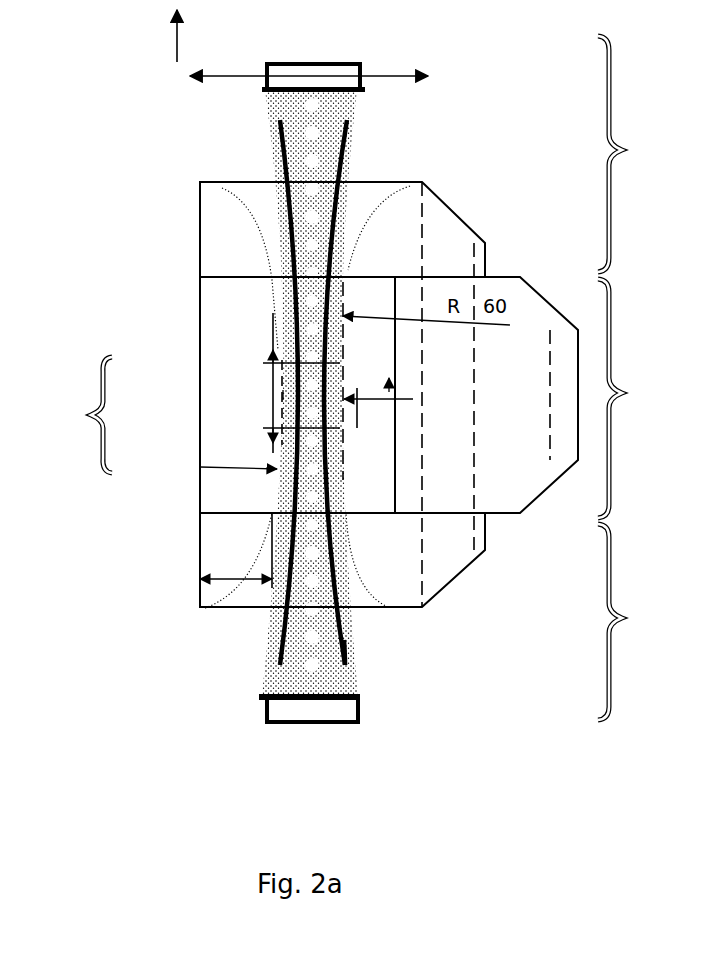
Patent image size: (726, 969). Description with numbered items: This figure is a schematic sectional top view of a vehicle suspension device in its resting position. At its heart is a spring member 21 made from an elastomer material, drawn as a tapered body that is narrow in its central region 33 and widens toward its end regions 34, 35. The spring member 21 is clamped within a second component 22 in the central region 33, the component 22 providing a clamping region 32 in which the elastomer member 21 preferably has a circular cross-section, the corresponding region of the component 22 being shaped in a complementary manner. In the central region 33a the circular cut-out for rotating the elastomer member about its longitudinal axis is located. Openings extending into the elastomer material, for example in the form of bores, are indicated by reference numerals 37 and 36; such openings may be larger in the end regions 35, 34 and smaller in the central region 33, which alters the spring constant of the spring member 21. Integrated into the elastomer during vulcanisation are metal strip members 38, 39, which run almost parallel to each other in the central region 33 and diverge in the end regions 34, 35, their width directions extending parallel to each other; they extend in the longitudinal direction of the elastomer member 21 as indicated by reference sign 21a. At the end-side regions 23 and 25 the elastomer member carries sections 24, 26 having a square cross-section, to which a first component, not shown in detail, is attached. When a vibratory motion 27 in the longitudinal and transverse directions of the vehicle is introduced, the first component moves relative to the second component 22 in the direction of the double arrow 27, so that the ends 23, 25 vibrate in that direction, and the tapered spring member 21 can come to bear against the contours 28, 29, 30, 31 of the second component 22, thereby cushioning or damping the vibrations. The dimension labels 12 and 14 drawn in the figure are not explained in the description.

The spring member 21 is at (350, 655).
The longitudinal direction of the elastomer member 21a is at (175, 44).
The second component 22 is at (422, 607).
The end-side region of the elastomer member 23 is at (355, 106).
The section having a square cross-section 24 is at (340, 73).
The end-side region of the elastomer member 25 is at (265, 680).
The section having a square cross-section 26 is at (313, 708).
The vibratory motion 27 is at (400, 72).
The contour of the second component 28 is at (392, 182).
The contour of the second component 29 is at (237, 183).
The contour of the second component 30 is at (248, 595).
The contour of the second component 31 is at (373, 600).
The clamping region 32 is at (90, 415).
The central region 33 is at (622, 393).
The central region of the elastomer member 33a is at (282, 397).
The end region 34 is at (622, 150).
The end region 35 is at (622, 618).
The opening 36 is at (283, 705).
The opening 37 is at (308, 105).
The metal strip member 38 is at (280, 128).
The metal strip member 39 is at (352, 140).
The dimension 12 is at (382, 401).
The dimension 14 is at (287, 383).